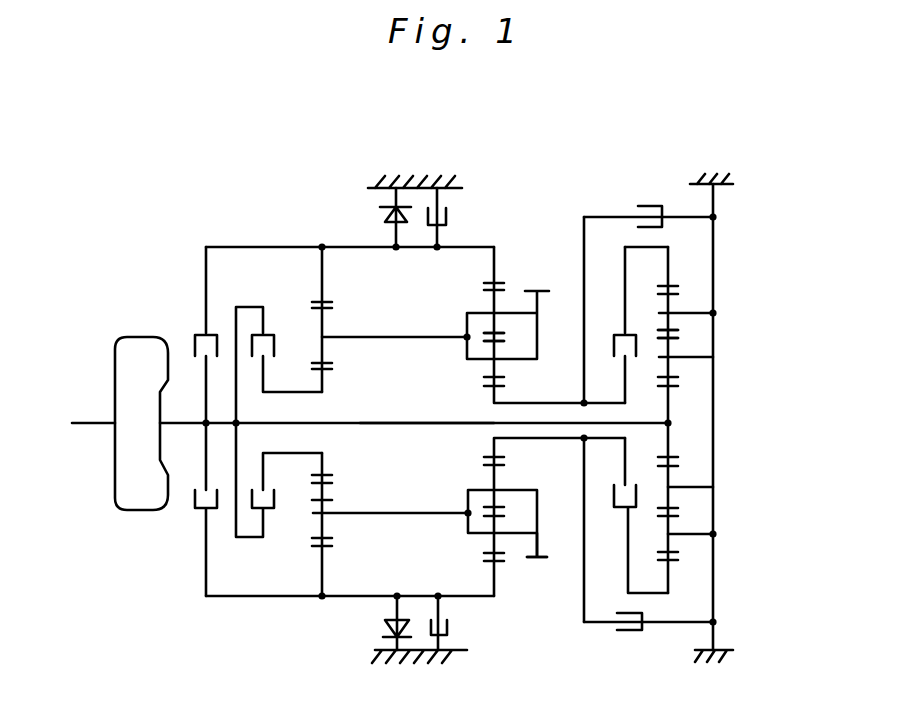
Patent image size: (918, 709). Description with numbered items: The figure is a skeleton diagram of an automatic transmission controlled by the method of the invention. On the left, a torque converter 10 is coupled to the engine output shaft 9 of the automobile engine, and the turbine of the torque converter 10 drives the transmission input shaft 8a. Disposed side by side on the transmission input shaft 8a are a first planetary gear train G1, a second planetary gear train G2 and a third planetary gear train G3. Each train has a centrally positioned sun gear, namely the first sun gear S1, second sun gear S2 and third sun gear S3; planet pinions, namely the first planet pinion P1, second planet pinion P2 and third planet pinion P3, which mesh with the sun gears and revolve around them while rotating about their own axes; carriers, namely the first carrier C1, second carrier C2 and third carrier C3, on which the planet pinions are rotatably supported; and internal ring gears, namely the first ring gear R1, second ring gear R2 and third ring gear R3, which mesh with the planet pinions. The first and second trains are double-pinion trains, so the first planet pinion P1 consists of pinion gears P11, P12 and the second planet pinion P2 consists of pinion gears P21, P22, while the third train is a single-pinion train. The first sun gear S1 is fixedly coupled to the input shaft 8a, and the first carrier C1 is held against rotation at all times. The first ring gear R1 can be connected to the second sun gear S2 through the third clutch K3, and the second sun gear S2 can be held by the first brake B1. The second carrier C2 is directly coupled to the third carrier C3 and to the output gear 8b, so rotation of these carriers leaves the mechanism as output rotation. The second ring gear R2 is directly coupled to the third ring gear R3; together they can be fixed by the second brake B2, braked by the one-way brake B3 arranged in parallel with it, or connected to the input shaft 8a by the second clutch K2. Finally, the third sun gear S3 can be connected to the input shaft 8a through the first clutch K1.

The engine output shaft 9 is at (92, 428).
The torque converter 10 is at (132, 352).
The first clutch K1 is at (276, 345).
The second clutch K2 is at (193, 333).
The third clutch K3 is at (638, 491).
The first brake B1 is at (626, 632).
The second brake B2 is at (452, 630).
The one-way brake B3 is at (387, 630).
The first planetary gear train G1 is at (708, 375).
The second planetary gear train G2 is at (499, 200).
The third planetary gear train G3 is at (340, 220).
The first ring gear R1 is at (676, 284).
The first carrier C1 is at (714, 314).
The first planet pinion P1 is at (796, 369).
The pinion gear P11 is at (670, 350).
The pinion gear P12 is at (670, 323).
The first sun gear S1 is at (672, 389).
The second ring gear R2 is at (492, 283).
The second carrier C2 is at (467, 315).
The second planet pinion P2 is at (395, 345).
The pinion gear P21 is at (485, 370).
The pinion gear P22 is at (486, 331).
The second sun gear S2 is at (494, 389).
The third ring gear R3 is at (328, 548).
The third carrier C3 is at (332, 513).
The third planet pinion P3 is at (326, 496).
The third sun gear S3 is at (326, 477).
The transmission input shaft 8a is at (360, 427).
The output gear 8b is at (536, 562).